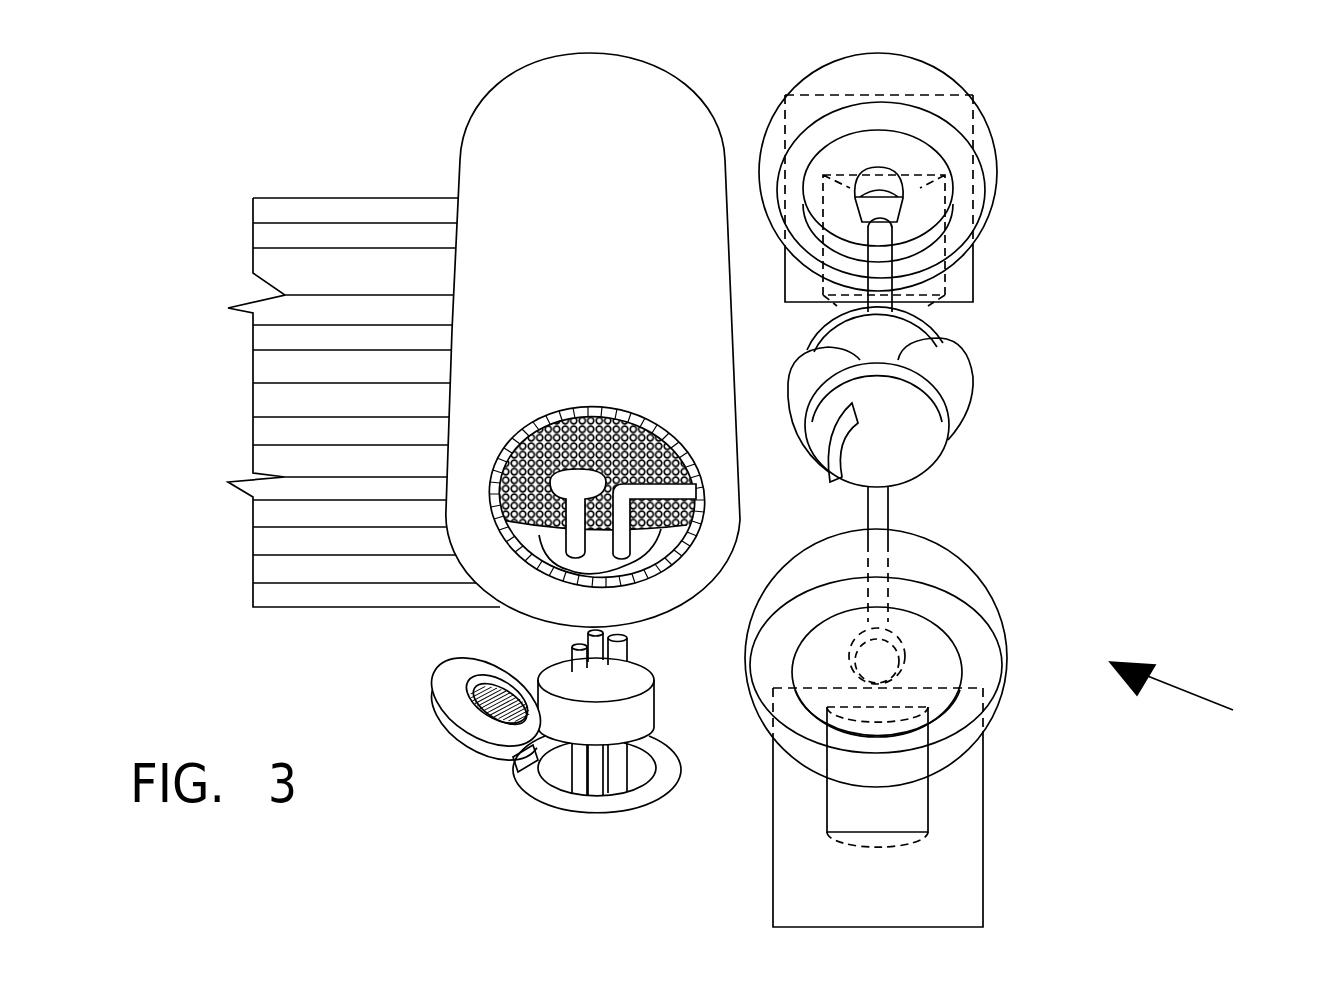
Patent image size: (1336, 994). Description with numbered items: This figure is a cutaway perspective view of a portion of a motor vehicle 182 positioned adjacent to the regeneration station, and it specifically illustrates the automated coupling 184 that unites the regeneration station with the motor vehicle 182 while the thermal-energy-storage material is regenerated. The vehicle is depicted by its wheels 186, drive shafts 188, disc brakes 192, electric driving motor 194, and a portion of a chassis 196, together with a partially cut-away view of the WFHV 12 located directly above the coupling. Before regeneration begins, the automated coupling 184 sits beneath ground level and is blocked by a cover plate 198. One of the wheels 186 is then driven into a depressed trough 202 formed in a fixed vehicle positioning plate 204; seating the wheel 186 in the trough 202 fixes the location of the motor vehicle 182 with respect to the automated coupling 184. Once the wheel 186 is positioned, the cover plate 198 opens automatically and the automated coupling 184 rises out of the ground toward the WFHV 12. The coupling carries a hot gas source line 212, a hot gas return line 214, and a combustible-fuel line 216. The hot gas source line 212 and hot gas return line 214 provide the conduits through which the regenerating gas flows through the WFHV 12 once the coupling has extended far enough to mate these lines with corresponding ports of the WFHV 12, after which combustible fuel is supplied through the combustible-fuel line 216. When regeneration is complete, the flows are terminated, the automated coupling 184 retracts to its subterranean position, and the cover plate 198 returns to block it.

The WFHV 12 is at (632, 255).
The chassis 196 is at (372, 382).
The motor vehicle 182 is at (1207, 699).
The automated coupling 184 is at (618, 727).
The wheels 186 is at (925, 75).
The drive shafts 188 is at (883, 242).
The disc brakes 192 is at (930, 323).
The electric driving motor 194 is at (940, 360).
The cover plate 198 is at (485, 743).
The depressed trough 202 is at (895, 808).
The fixed vehicle positioning plate 204 is at (927, 876).
The hot gas source line 212 is at (578, 683).
The hot gas return line 214 is at (618, 662).
The combustible-fuel line 216 is at (597, 640).